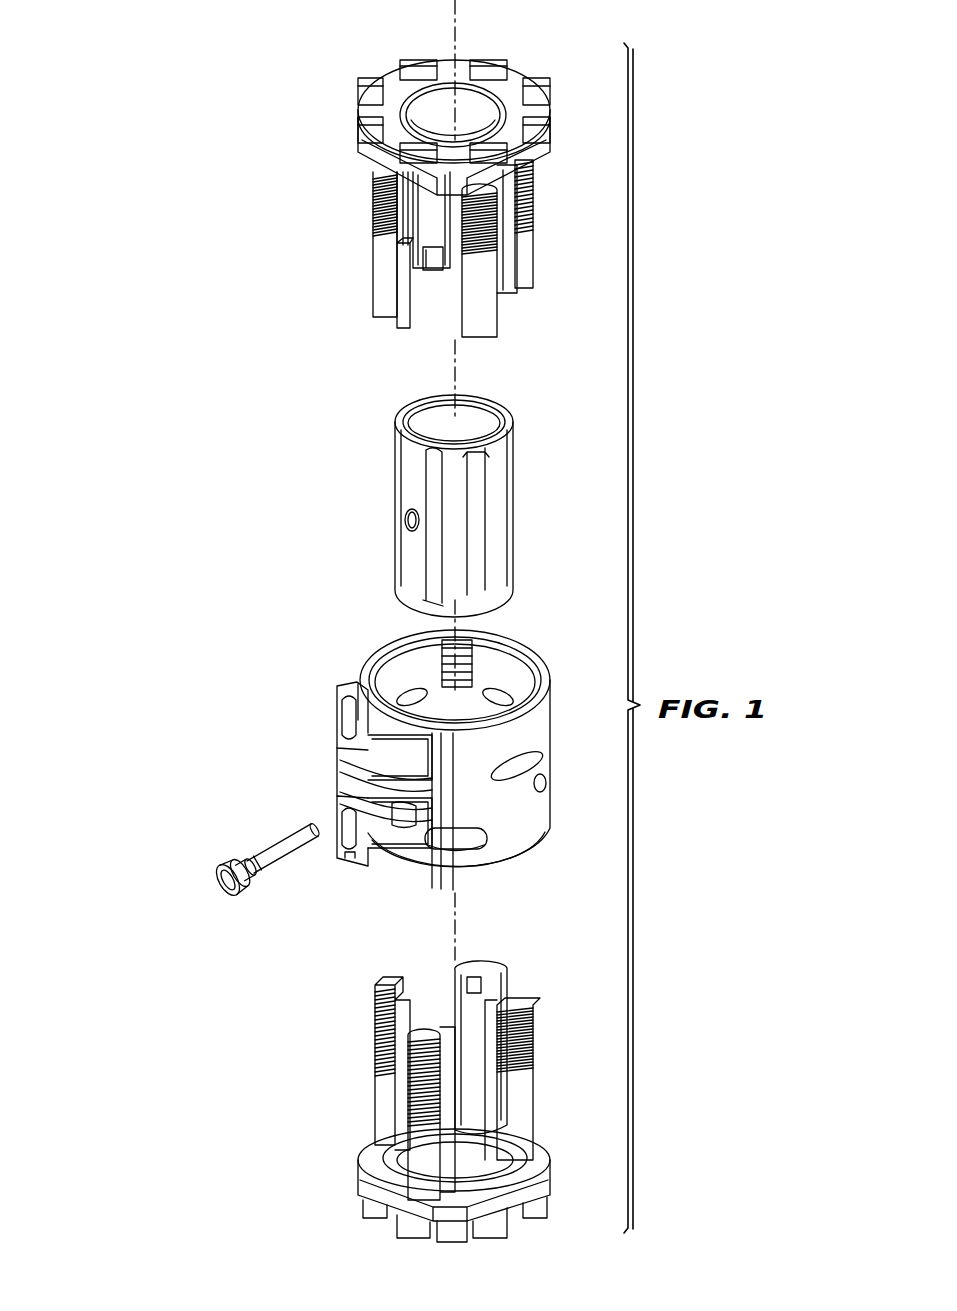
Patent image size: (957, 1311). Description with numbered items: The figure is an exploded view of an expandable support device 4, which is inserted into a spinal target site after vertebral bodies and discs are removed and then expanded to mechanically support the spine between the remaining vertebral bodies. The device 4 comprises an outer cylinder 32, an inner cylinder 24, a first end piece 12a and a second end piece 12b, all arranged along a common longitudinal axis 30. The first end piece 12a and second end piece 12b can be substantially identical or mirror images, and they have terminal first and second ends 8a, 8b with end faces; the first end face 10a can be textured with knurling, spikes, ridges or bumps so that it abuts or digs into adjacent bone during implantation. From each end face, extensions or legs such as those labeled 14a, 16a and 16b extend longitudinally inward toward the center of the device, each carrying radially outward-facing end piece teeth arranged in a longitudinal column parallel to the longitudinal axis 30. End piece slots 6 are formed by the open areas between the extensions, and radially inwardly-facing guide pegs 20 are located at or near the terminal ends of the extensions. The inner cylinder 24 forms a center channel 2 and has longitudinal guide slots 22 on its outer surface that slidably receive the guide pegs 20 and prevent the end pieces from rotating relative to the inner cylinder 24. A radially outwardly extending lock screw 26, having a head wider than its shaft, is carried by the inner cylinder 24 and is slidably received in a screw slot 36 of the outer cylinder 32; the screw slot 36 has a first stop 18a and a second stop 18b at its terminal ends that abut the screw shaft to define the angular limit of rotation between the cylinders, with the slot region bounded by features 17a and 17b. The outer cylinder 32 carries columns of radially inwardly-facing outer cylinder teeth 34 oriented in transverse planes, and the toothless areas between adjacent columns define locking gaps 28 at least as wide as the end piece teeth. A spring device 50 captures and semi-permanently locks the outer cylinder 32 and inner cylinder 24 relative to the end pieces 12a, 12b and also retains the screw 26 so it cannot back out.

The center channel 2 is at (478, 412).
The expandable support device 4 is at (100, 505).
The end piece slots 6 is at (400, 292).
The first end 8a is at (372, 88).
The second end 8b is at (362, 1205).
The first end face 10a is at (512, 88).
The first end piece 12a is at (325, 160).
The second end piece 12b is at (328, 1115).
The threaded leg 14a is at (395, 228).
The threaded leg 16a is at (498, 298).
The threaded leg 16b is at (530, 1080).
The clamp lug 17a is at (345, 693).
The clamp lug 17b is at (340, 842).
The first stop 18a is at (395, 832).
The second stop 18b is at (338, 793).
The guide pegs 20 is at (433, 272).
The guide slots 22 is at (478, 512).
The inner cylinder 24 is at (366, 478).
The lock screw 26 is at (245, 841).
The locking gap 28 is at (405, 660).
The longitudinal axis 30 is at (459, 47).
The outer cylinder 32 is at (303, 733).
The outer cylinder teeth 34 is at (472, 663).
The screw slot 36 is at (395, 805).
The spring device 50 is at (425, 815).